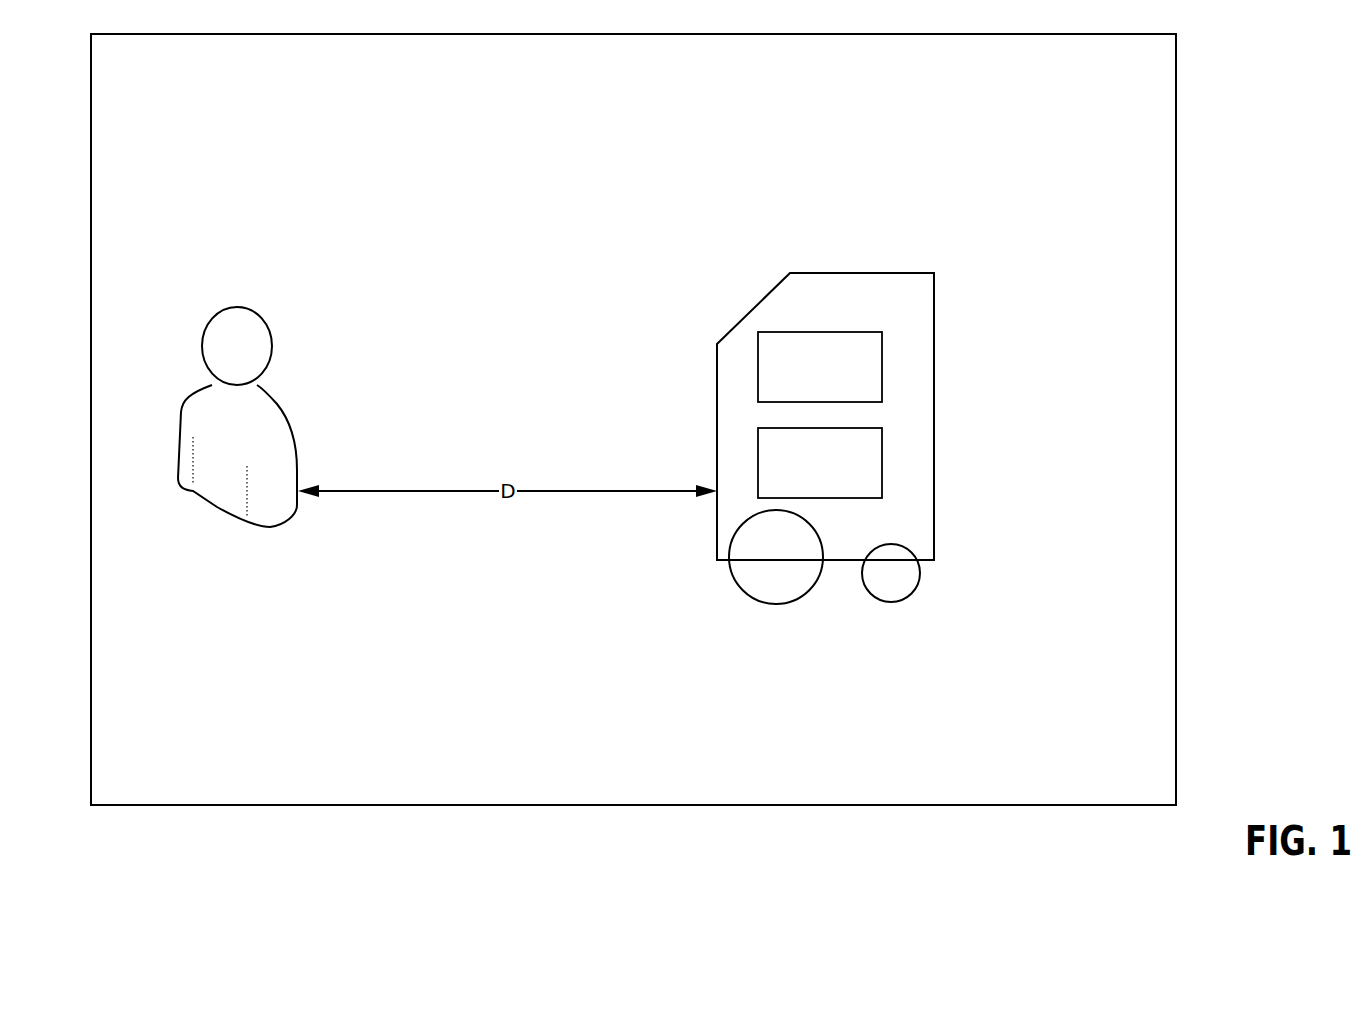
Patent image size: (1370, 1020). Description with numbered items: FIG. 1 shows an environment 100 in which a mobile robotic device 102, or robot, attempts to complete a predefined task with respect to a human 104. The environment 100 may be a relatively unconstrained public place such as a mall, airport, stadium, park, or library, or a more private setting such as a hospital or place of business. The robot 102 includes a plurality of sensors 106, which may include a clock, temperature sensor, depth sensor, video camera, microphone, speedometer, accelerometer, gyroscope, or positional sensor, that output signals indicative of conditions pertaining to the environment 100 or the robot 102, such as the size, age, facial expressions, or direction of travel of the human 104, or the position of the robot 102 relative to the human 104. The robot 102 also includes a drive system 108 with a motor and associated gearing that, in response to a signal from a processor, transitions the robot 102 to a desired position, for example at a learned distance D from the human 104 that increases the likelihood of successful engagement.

The environment 100 is at (1018, 134).
The mobile robotic device 102 is at (828, 272).
The human 104 is at (257, 313).
The sensors 106 is at (815, 331).
The drive system 108 is at (882, 450).